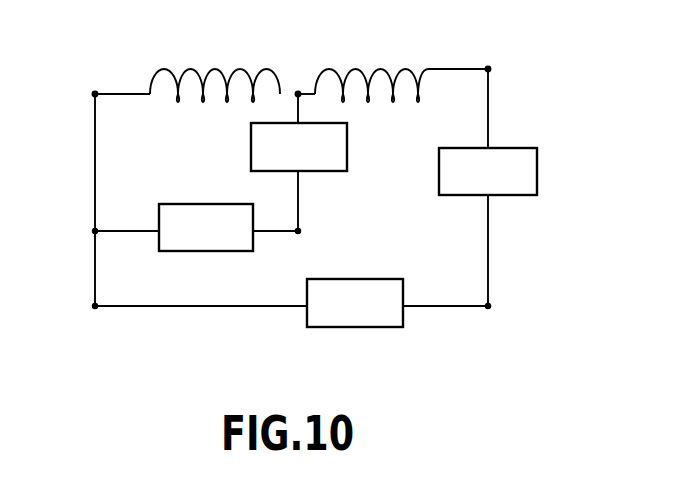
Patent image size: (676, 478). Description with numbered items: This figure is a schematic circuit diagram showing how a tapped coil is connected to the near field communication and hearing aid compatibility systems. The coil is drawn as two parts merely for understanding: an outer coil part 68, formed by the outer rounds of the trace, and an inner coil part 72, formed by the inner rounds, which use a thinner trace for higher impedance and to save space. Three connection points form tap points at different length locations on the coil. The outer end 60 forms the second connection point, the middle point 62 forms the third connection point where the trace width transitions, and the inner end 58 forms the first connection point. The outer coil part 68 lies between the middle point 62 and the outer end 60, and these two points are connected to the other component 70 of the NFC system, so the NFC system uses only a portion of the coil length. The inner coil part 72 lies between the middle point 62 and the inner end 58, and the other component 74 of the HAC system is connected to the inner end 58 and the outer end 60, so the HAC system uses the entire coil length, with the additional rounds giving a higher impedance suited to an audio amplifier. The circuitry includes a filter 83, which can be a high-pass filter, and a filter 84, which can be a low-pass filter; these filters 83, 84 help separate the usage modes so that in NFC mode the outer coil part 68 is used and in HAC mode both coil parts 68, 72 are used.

The outer end 60 is at (95, 93).
The outer coil part 68 is at (188, 70).
The middle point 62 is at (297, 93).
The inner coil part 72 is at (390, 70).
The inner end 58 is at (489, 68).
The high-pass filter 83 is at (333, 172).
The low-pass filter 84 is at (538, 160).
The component of the NFC system 70 is at (176, 252).
The component of the HAC system 74 is at (380, 328).